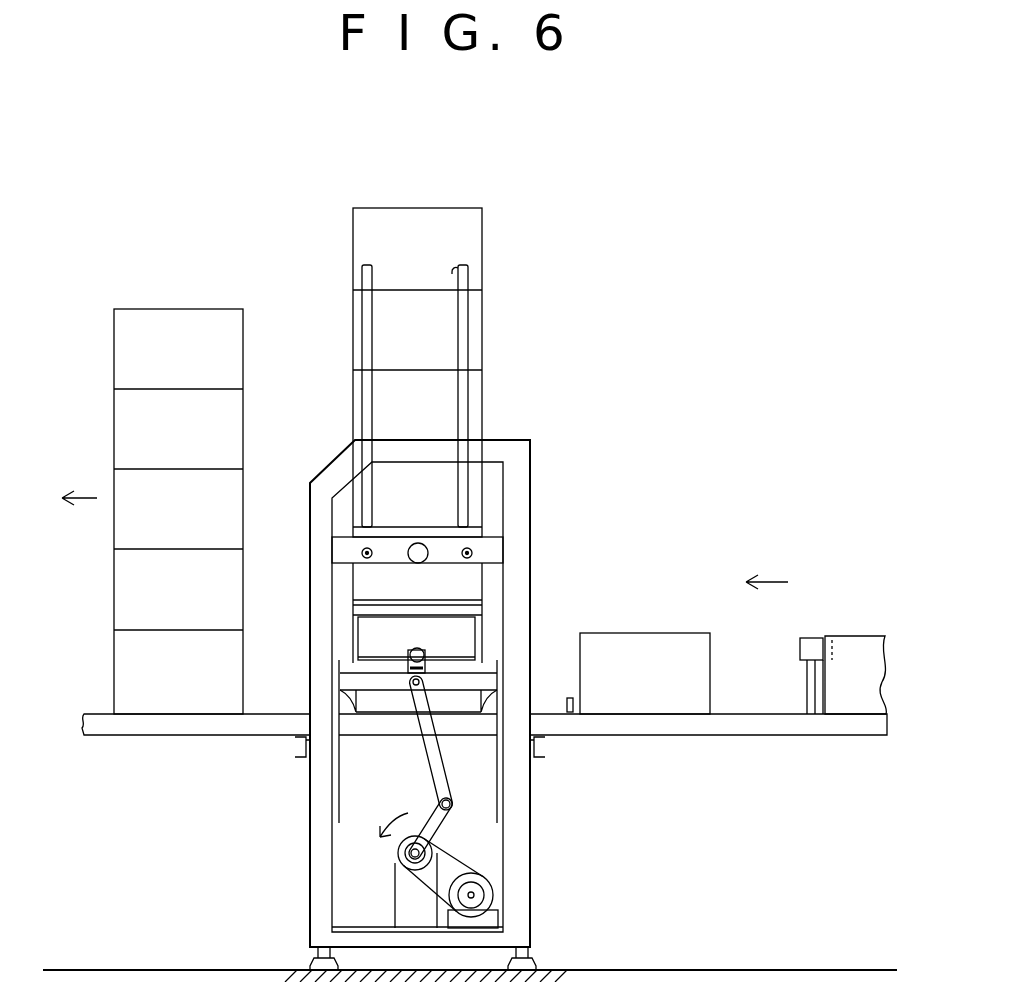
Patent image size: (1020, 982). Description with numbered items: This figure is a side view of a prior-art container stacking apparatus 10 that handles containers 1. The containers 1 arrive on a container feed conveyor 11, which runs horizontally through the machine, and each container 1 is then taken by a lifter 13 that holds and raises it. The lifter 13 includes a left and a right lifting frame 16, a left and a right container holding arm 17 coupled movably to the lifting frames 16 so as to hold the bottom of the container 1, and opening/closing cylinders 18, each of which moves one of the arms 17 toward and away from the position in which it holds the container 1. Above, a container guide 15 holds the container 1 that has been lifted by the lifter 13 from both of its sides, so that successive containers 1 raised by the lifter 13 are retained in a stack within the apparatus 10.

The container 1 is at (475, 233).
The container stacking apparatus 10 is at (614, 286).
The container feed conveyor 11 is at (782, 730).
The lifter 13 is at (424, 799).
The container guide 15 is at (472, 322).
The lifting frame 16 is at (382, 683).
The container holding arm 17 is at (459, 610).
The opening/closing cylinder 18 is at (424, 650).